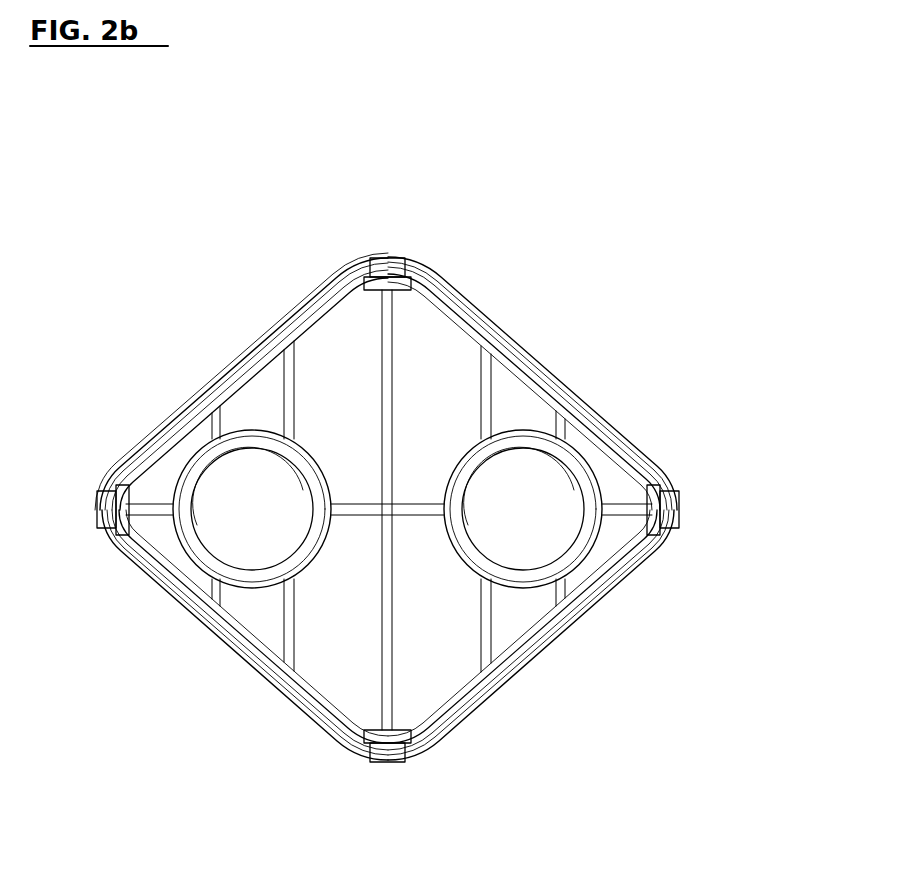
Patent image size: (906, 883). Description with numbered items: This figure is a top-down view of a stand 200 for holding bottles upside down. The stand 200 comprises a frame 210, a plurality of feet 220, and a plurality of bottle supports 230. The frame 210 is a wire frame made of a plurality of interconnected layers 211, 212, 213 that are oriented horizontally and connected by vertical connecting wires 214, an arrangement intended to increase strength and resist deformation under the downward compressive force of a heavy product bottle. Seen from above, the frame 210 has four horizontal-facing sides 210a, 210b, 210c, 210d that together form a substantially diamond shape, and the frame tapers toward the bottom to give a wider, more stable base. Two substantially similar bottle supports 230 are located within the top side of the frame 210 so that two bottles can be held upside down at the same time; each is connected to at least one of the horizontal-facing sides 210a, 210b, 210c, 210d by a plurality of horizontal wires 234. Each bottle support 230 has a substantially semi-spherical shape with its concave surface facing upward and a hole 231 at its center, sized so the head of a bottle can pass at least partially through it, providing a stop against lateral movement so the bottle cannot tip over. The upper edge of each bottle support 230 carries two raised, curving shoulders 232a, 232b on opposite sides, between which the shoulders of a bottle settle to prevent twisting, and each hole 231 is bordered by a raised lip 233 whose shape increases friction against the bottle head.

The stand 200 is at (160, 185).
The frame 210 is at (346, 256).
The horizontal-facing side 210a is at (665, 428).
The horizontal-facing side 210b is at (578, 663).
The horizontal-facing side 210c is at (222, 665).
The horizontal-facing side 210d is at (292, 297).
The interconnected layer 211 is at (474, 313).
The interconnected layer 212 is at (525, 353).
The interconnected layer 213 is at (590, 400).
The vertical connecting wire 214 is at (490, 700).
The foot 220 is at (405, 256).
The bottle support 230 is at (247, 442).
The hole 231 is at (481, 503).
The raised shoulder 232a is at (332, 503).
The raised shoulder 232b is at (173, 500).
The raised lip 233 is at (205, 472).
The horizontal wire 234 is at (476, 405).